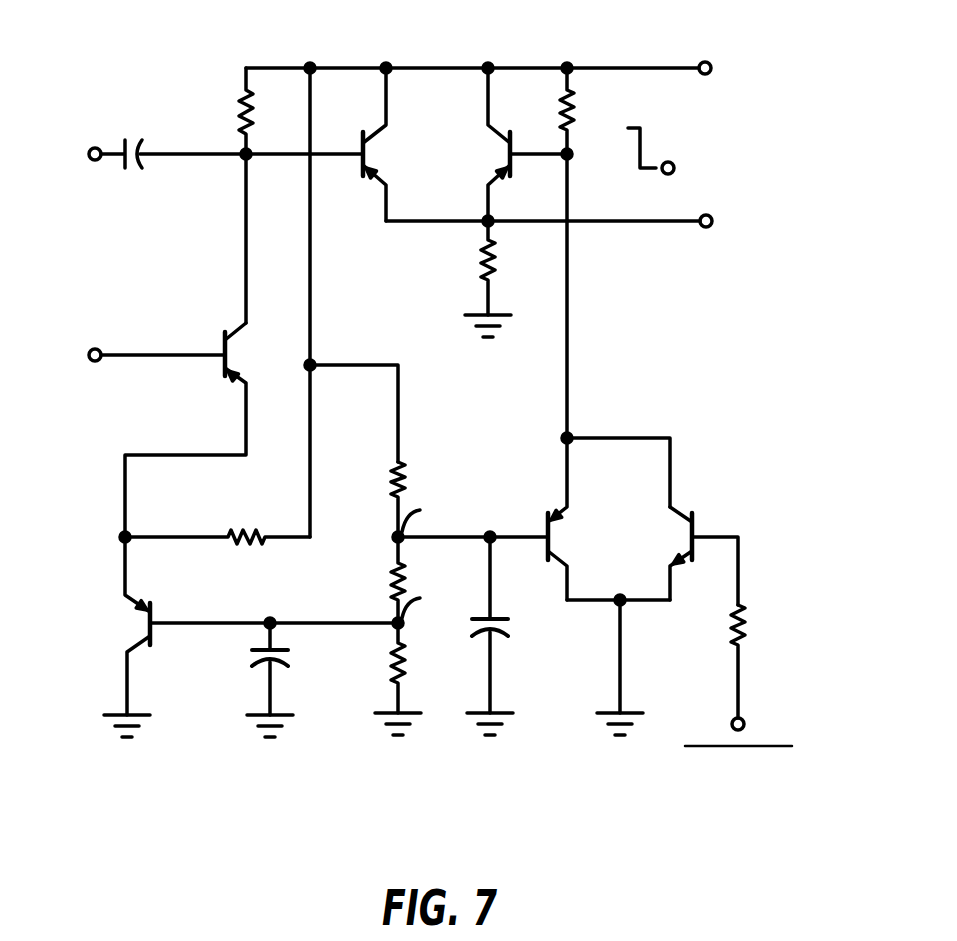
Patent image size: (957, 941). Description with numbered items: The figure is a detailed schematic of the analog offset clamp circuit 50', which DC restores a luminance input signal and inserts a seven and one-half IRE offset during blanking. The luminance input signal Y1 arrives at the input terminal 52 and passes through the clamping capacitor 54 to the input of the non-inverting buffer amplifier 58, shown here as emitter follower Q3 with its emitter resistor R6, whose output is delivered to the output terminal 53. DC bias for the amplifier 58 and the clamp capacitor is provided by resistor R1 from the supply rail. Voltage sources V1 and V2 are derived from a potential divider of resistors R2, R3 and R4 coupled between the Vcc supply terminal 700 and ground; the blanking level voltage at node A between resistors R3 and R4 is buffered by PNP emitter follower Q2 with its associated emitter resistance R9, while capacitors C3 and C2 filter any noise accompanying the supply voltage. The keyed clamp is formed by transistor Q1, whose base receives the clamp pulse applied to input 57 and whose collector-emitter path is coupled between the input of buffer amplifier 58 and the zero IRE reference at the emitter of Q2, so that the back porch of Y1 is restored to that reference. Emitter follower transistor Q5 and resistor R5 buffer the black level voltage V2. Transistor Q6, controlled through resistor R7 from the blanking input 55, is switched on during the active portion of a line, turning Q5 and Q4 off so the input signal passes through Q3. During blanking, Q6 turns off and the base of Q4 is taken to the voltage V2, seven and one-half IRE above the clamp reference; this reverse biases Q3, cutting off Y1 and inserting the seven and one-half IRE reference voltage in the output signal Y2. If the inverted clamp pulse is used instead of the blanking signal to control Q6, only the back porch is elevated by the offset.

The offset clamp circuit 50' is at (419, 406).
The input terminal 52 is at (92, 162).
The input coupling capacitor 54 is at (141, 160).
The clamp pulse input 57 is at (99, 349).
The Y2 output terminal 53 is at (712, 221).
The blanking input terminal 55 is at (743, 719).
The Vcc supply terminal 700 is at (711, 72).
The non-inverting buffer amplifier 58 is at (459, 164).
The resistor R1 is at (239, 110).
The resistor R2 is at (404, 467).
The resistor R3 is at (392, 574).
The resistor R4 is at (392, 648).
The resistor R5 is at (570, 125).
The resistor R6 is at (480, 260).
The resistor R7 is at (731, 625).
The emitter resistance R9 is at (238, 534).
The capacitor C2 is at (506, 620).
The capacitor C3 is at (250, 650).
The transistor Q1 is at (275, 364).
The PNP emitter follower Q2 is at (128, 638).
The emitter follower transistor Q3 is at (403, 166).
The transistor Q4 is at (492, 166).
The emitter follower transistor Q5 is at (593, 550).
The transistor Q6 is at (673, 550).